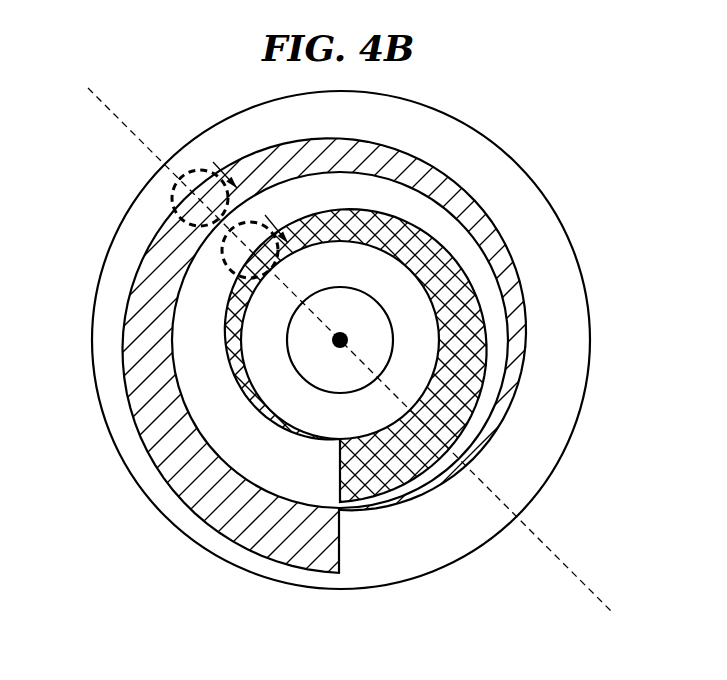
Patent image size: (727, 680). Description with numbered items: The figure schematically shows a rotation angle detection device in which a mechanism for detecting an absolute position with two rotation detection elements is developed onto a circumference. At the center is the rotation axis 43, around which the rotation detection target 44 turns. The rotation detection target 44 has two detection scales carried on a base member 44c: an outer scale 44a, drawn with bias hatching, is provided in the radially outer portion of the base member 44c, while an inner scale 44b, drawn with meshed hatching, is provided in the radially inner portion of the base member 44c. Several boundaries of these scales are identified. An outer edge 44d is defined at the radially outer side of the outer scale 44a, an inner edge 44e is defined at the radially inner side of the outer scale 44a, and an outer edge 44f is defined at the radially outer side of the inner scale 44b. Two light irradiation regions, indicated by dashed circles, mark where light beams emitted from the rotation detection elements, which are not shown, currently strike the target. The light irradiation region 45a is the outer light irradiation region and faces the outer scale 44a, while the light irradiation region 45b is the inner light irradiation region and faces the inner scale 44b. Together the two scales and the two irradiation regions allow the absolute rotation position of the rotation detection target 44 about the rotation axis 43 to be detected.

The rotation axis 43 is at (348, 337).
The rotation detection target 44 is at (590, 132).
The outer scale 44a is at (327, 537).
The inner scale 44b is at (348, 472).
The base member 44c is at (337, 580).
The outer edge 44d is at (172, 490).
The inner edge 44e is at (197, 530).
The outer edge 44f is at (237, 389).
The light irradiation region 45a is at (172, 191).
The light irradiation region 45b is at (223, 252).